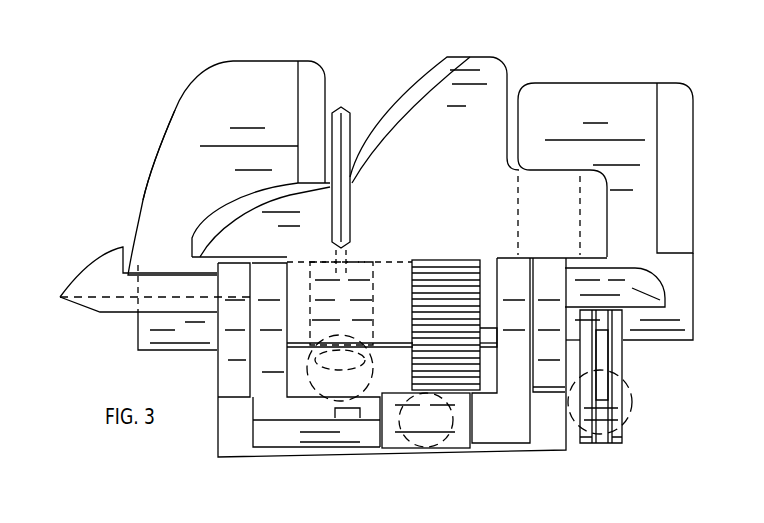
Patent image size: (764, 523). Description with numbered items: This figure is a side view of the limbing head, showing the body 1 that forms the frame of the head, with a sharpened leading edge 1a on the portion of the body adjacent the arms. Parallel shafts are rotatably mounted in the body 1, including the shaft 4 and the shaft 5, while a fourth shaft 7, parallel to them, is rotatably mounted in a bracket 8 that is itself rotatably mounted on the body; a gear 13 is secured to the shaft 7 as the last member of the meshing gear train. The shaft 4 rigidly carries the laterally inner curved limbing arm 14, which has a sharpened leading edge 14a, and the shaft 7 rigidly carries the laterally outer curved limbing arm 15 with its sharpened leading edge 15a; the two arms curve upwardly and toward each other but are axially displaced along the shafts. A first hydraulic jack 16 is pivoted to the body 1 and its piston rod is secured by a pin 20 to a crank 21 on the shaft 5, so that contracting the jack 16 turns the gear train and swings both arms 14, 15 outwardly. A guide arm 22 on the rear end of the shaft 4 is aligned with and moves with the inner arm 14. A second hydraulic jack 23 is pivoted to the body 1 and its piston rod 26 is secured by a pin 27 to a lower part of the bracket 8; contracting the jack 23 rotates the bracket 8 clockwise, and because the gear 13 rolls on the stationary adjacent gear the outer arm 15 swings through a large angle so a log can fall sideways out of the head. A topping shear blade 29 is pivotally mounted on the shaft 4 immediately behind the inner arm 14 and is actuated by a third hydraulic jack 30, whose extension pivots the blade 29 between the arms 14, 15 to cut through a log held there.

The body 1 is at (550, 444).
The sharpened leading edge 1a is at (73, 281).
The shaft 4 is at (686, 295).
The shaft 5 is at (622, 350).
The fourth shaft 7 is at (518, 297).
The bracket 8 is at (263, 415).
The gear 13 is at (462, 268).
The laterally inner curved limbing arm 14 is at (257, 68).
The sharpened leading edge 14a is at (166, 119).
The laterally outer curved limbing arm 15 is at (465, 70).
The sharpened leading edge 15a is at (233, 193).
The first hydraulic jack 16 is at (624, 392).
The pin 20 is at (620, 409).
The crank 21 is at (618, 364).
The guide arm 22 is at (639, 92).
The second hydraulic jack 23 is at (486, 350).
The piston rod 26 is at (468, 437).
The pin 27 is at (357, 425).
The topping shear blade 29 is at (343, 112).
The third hydraulic jack 30 is at (368, 323).